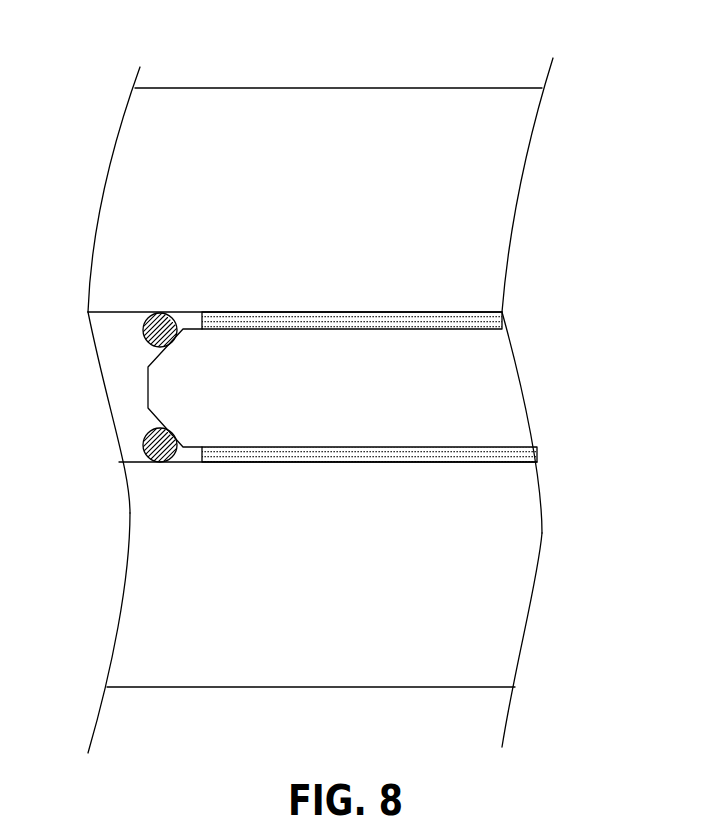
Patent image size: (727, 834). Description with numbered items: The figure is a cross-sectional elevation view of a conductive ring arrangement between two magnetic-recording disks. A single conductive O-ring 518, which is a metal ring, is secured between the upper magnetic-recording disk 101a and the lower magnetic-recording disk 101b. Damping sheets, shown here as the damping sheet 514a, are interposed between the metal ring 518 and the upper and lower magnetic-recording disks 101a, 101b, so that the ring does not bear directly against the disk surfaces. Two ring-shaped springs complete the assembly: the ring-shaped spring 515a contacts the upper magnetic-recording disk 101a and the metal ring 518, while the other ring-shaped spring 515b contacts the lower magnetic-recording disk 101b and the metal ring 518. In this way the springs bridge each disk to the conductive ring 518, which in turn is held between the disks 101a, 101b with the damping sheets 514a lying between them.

The upper magnetic-recording disk 101a is at (277, 90).
The lower magnetic-recording disk 101b is at (277, 688).
The damping sheet 514a is at (503, 319).
The ring-shaped spring 515a is at (143, 330).
The ring-shaped spring 515b is at (143, 437).
The conductive O-ring 518 is at (147, 388).